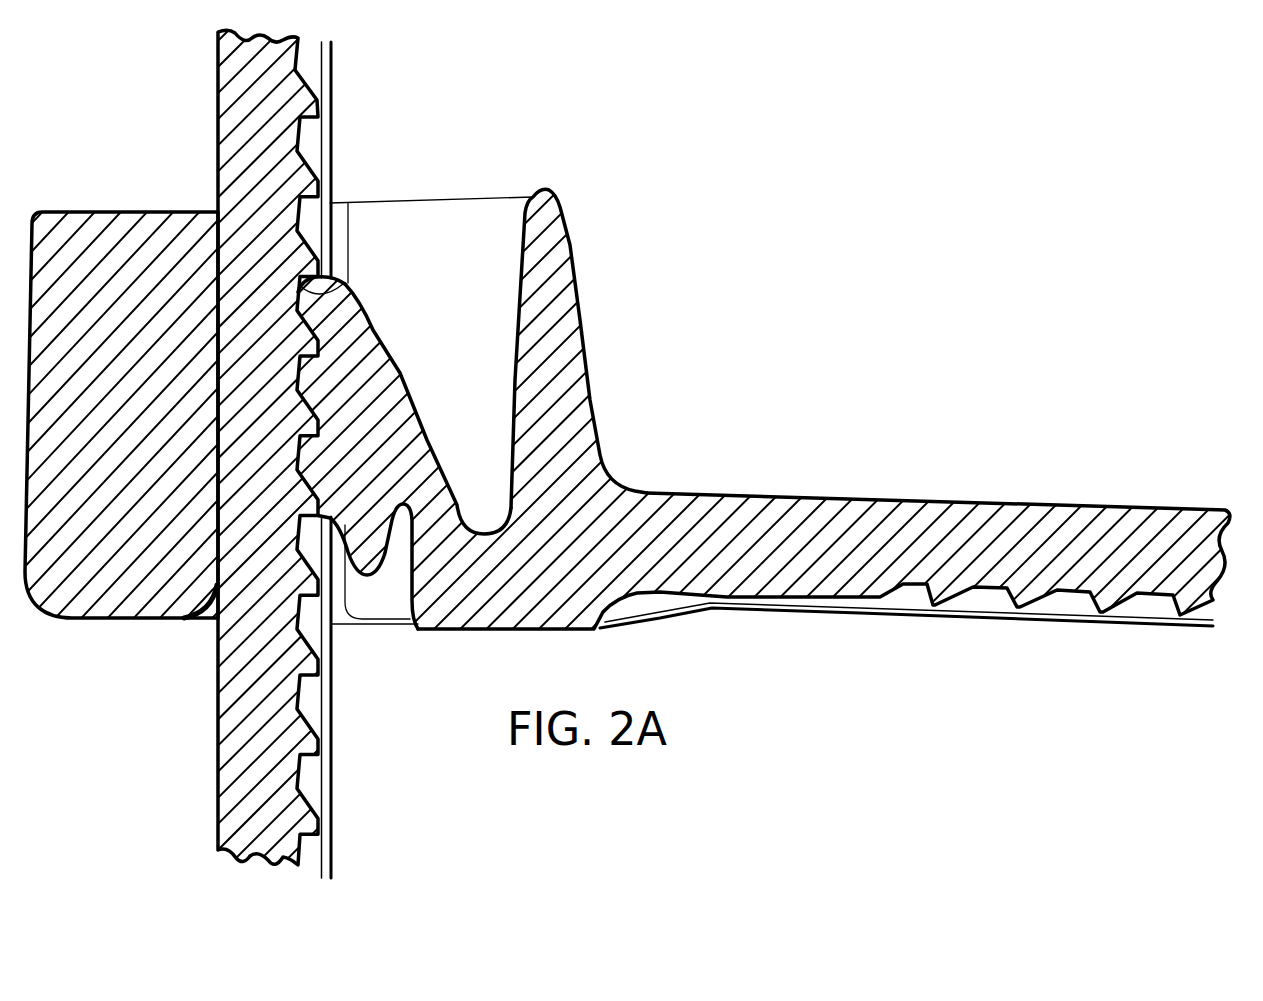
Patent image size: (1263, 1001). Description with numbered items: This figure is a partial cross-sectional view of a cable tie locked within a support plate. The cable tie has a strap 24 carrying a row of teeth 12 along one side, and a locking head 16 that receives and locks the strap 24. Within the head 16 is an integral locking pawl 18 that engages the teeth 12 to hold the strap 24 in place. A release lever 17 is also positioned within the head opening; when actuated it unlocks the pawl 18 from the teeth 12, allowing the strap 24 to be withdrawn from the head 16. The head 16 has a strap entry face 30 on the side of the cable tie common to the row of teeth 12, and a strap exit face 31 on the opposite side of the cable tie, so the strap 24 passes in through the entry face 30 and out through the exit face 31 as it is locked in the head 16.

The teeth 12 is at (327, 183).
The locking head 16 is at (567, 297).
The release lever 17 is at (410, 427).
The locking pawl 18 is at (342, 294).
The strap 24 is at (907, 497).
The strap entry face 30 is at (411, 614).
The strap exit face 31 is at (216, 262).